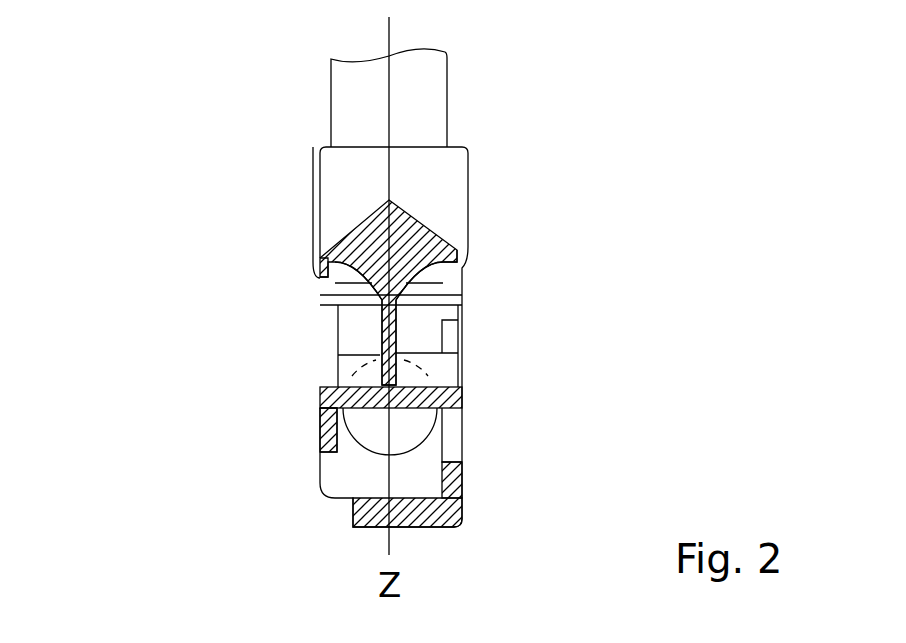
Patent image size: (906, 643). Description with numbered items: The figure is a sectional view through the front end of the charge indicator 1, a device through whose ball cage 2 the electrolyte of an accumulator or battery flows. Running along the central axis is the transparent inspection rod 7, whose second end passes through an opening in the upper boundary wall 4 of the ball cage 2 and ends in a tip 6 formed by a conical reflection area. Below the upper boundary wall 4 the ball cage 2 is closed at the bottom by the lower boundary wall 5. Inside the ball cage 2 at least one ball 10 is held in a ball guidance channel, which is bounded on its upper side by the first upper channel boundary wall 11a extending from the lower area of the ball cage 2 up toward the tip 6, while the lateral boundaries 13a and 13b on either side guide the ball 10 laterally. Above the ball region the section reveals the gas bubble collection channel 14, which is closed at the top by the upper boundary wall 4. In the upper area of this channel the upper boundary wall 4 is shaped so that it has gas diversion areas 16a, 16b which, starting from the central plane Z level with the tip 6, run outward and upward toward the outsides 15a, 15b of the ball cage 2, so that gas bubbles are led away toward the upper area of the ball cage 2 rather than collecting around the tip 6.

The charge indicator 1 is at (175, 127).
The ball cage 2 is at (625, 165).
The upper boundary wall 4 is at (430, 245).
The lower boundary wall 5 is at (432, 530).
The tip 6 is at (415, 320).
The inspection rod 7 is at (425, 99).
The ball 10 is at (417, 430).
The first upper channel boundary wall 11a is at (330, 398).
The lateral boundary 13a is at (325, 430).
The lateral boundary 13b is at (455, 488).
The gas bubble collection channel 14 is at (362, 335).
The outside of the ball cage 15a is at (320, 262).
The outside of the ball cage 15b is at (460, 258).
The gas diversion area 16a is at (335, 293).
The gas diversion area 16b is at (460, 292).